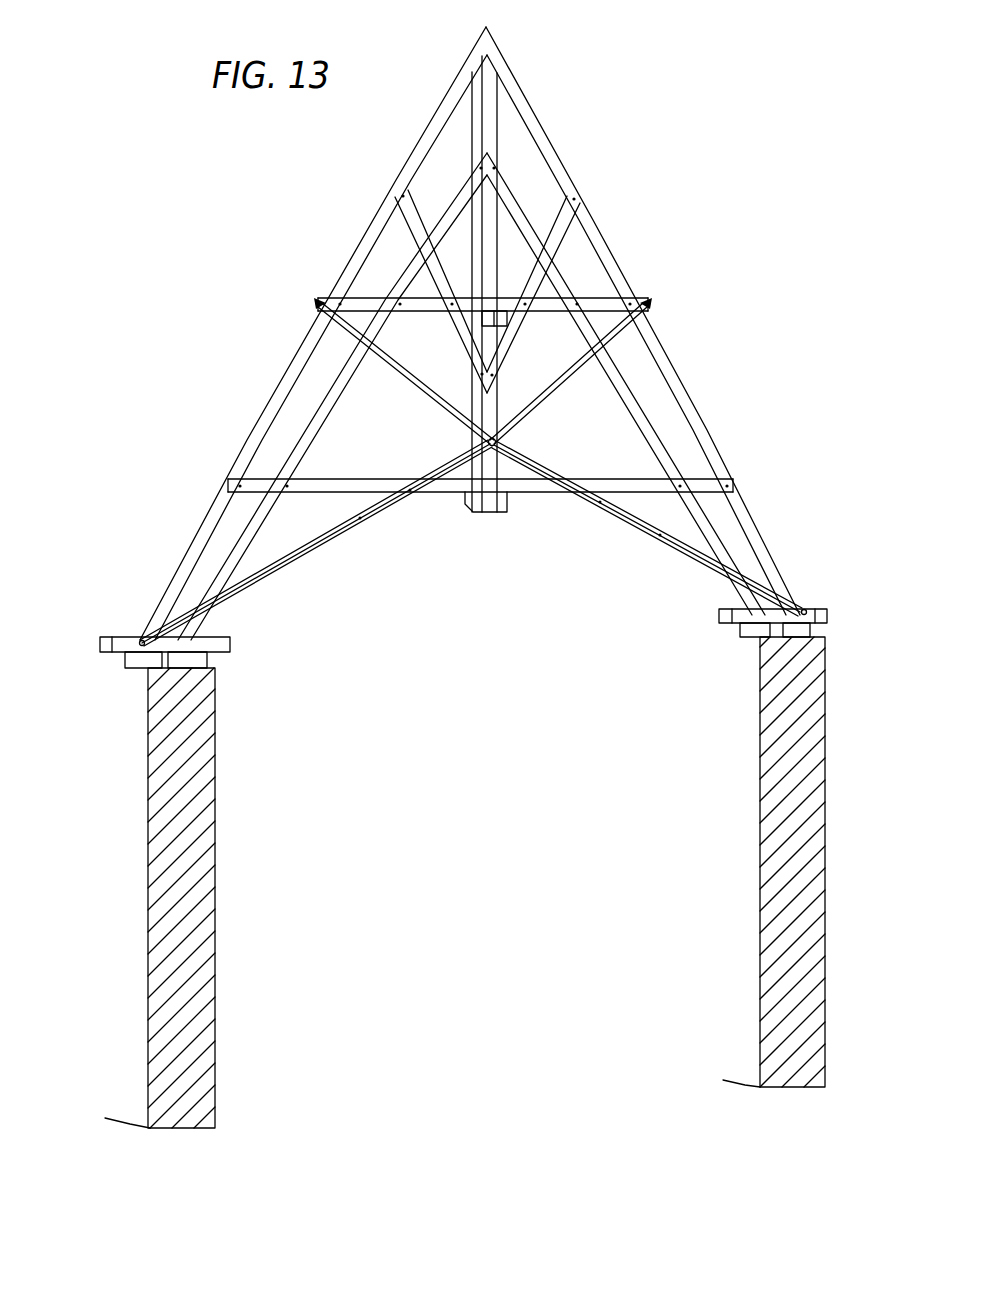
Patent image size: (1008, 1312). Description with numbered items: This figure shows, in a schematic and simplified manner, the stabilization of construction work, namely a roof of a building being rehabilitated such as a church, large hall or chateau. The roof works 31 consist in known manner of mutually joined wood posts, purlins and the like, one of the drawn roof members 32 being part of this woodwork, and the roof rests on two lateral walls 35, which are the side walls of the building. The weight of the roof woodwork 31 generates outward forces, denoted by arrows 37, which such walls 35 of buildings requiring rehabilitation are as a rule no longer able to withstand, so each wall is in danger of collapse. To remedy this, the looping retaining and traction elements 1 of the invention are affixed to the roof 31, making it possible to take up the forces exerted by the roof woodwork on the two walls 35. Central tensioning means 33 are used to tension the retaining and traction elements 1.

The traction element 1 is at (420, 397).
The roof works 31 is at (618, 211).
The rafter 32 is at (378, 233).
The central tensioning means 33 is at (350, 525).
The lateral wall 35 is at (166, 958).
The arrow 37 is at (105, 692).